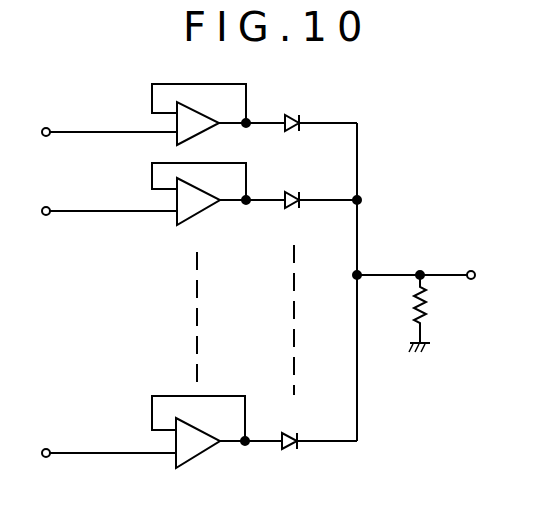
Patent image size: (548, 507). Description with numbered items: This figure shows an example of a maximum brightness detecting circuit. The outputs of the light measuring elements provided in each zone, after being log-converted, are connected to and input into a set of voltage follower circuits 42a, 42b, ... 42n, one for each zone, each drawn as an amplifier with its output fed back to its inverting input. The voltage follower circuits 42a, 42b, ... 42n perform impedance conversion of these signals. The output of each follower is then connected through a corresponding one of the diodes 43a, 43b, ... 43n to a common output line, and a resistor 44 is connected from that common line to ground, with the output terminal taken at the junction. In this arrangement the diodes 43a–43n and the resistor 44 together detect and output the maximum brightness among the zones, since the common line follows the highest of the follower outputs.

The voltage follower circuit 42a is at (177, 123).
The voltage follower circuit 42b is at (206, 208).
The voltage follower circuit 42n is at (204, 452).
The diode 43a is at (292, 116).
The diode 43b is at (291, 193).
The diode 43n is at (290, 449).
The resistor 44 is at (427, 303).